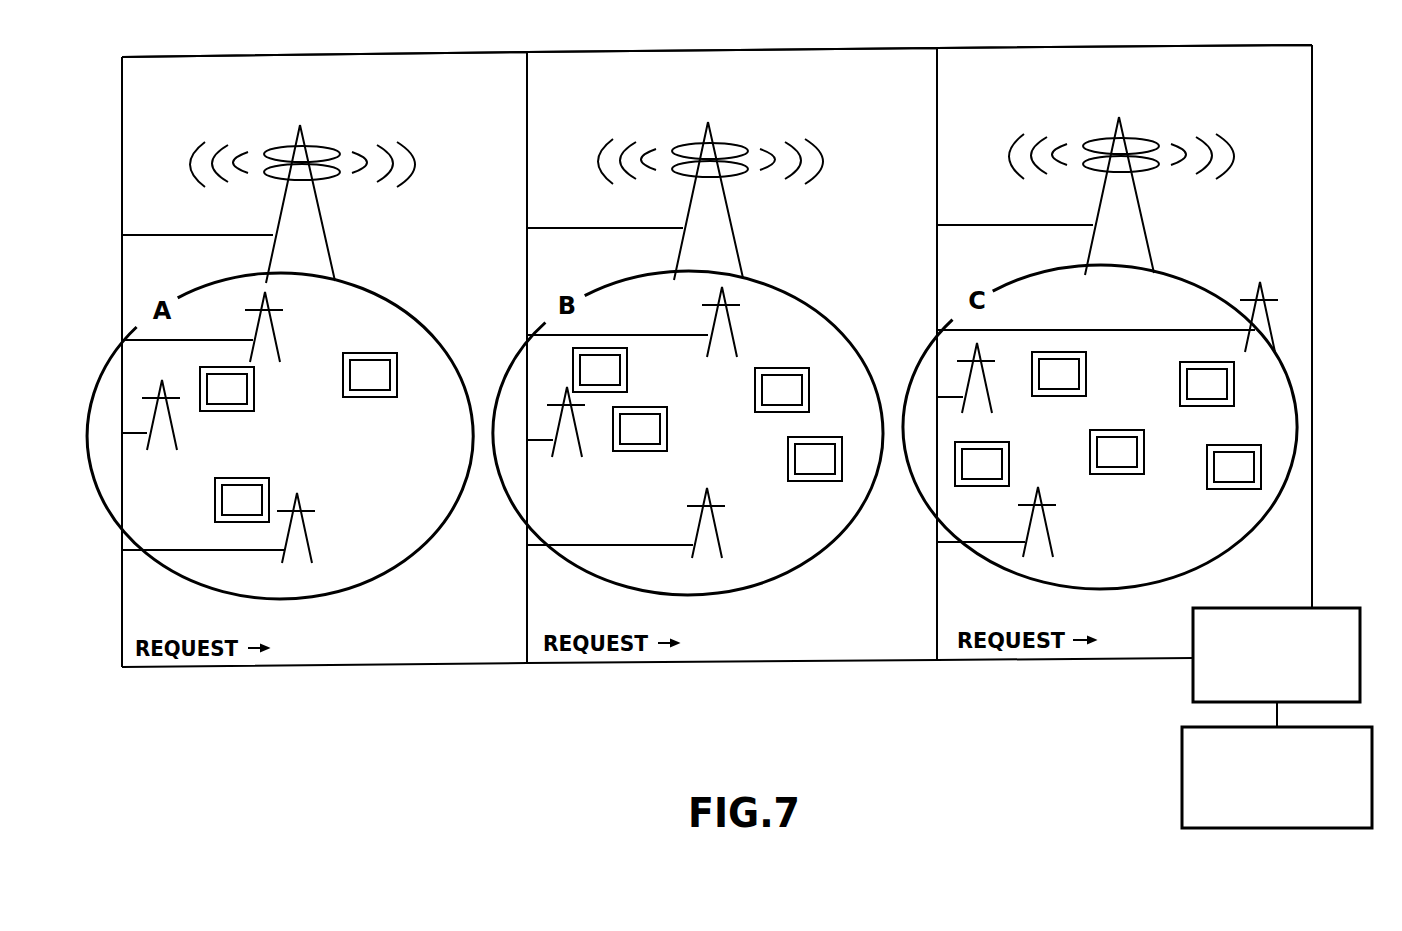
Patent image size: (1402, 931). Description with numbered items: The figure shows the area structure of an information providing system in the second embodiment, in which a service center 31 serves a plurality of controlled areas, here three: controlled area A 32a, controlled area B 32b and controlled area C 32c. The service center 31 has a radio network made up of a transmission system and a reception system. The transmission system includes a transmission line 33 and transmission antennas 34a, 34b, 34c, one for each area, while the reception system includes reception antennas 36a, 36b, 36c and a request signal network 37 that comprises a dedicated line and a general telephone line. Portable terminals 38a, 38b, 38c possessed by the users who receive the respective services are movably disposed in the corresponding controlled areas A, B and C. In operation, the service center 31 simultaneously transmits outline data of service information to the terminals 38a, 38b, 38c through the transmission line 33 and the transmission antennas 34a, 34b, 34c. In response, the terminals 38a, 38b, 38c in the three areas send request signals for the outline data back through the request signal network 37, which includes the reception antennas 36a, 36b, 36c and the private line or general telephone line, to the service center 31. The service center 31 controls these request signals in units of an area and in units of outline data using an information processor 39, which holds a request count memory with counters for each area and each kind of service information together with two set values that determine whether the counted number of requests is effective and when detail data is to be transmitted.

The service center 31 is at (1193, 677).
The controlled area A 32a is at (408, 72).
The controlled area B 32b is at (808, 68).
The controlled area C 32c is at (1170, 65).
The transmission line 33 is at (1313, 152).
The transmission antenna 34a is at (303, 137).
The transmission antenna 34b is at (713, 133).
The transmission antenna 34c is at (1123, 128).
The reception antenna 36a is at (277, 328).
The reception antenna 36b is at (732, 323).
The reception antenna 36c is at (1262, 282).
The request signal network 37 is at (790, 661).
The portable terminal 38a is at (253, 392).
The portable terminal 38b is at (628, 383).
The portable terminal 38c is at (1087, 360).
The information processor 39 is at (1182, 780).